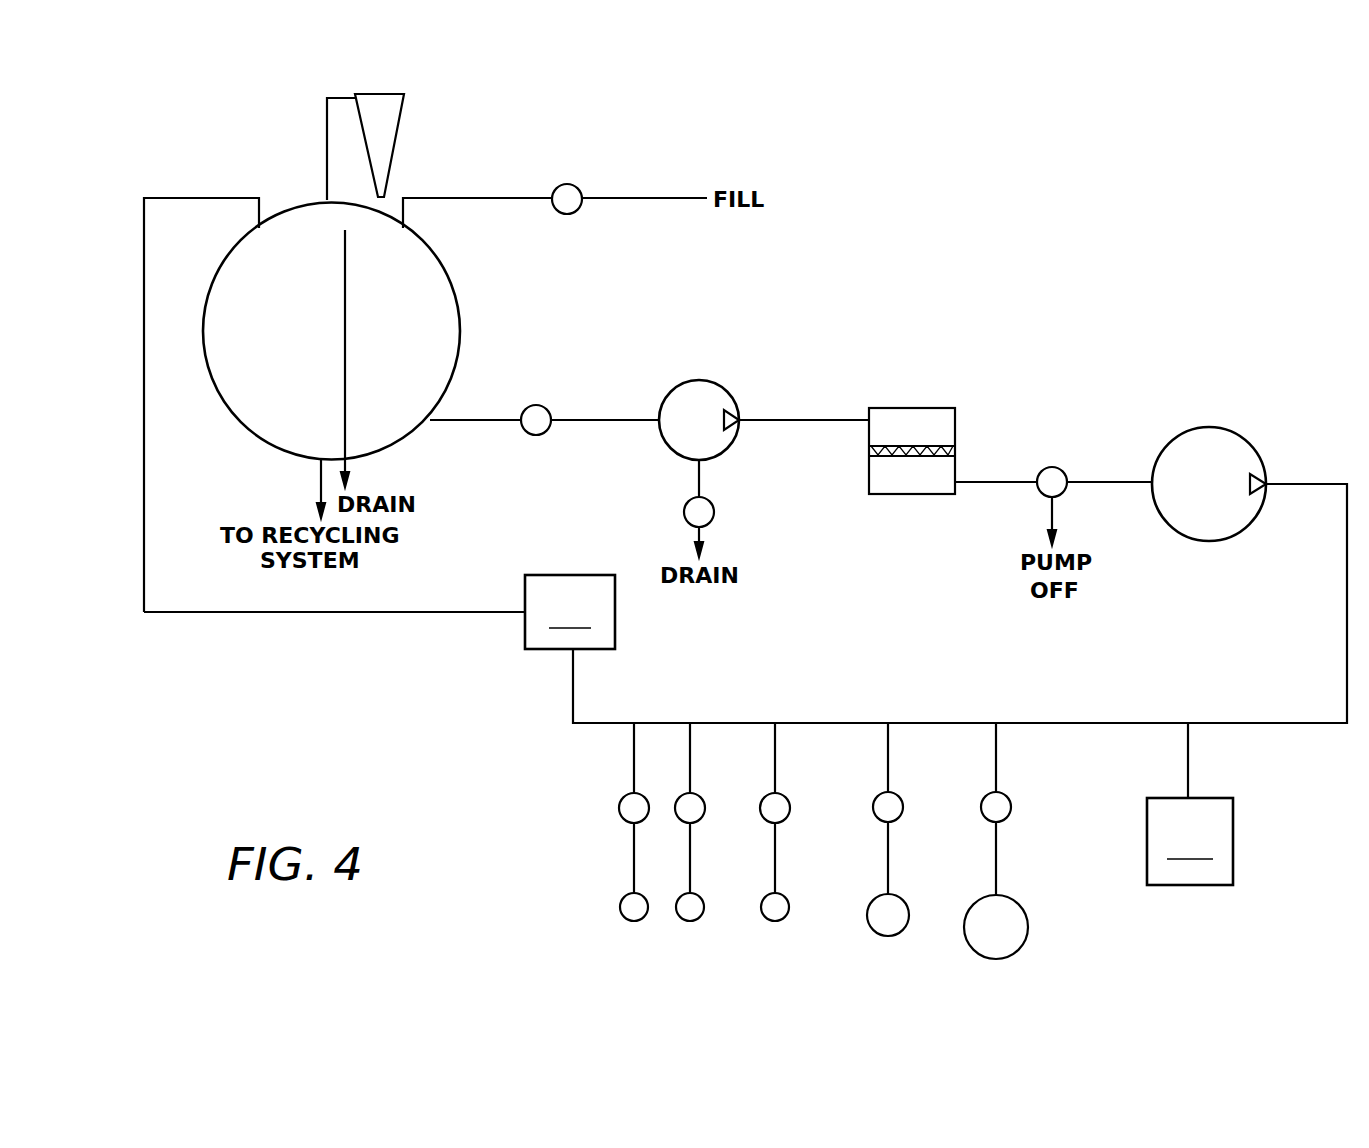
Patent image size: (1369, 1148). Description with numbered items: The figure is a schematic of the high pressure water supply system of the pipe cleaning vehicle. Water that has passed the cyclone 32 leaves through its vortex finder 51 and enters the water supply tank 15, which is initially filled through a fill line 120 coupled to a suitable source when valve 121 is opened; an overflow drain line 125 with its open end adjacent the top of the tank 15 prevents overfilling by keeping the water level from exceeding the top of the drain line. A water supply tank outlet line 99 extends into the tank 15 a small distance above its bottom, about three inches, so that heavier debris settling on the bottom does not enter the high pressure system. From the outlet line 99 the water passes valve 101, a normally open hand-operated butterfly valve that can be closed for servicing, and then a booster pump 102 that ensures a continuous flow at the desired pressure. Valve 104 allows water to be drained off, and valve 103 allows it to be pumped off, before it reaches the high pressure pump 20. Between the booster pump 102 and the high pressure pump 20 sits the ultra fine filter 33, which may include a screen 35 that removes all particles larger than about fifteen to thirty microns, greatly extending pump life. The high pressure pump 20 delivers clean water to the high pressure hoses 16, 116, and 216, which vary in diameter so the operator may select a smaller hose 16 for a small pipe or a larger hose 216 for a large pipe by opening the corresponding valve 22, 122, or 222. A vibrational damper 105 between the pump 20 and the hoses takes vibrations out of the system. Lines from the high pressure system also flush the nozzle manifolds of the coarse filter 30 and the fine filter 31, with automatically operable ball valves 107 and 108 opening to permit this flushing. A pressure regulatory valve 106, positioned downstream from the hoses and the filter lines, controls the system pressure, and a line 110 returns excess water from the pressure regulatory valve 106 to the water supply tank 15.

The water supply tank 15 is at (455, 291).
The overflow drain line 125 is at (345, 385).
The vortex finder 51 is at (355, 98).
The cyclone 32 is at (404, 95).
The valve 121 is at (566, 184).
The fill line 120 is at (627, 198).
The water supply tank outlet line 99 is at (470, 421).
The valve 101 is at (541, 405).
The booster pump 102 is at (706, 380).
The valve 104 is at (712, 517).
The ultra fine filter 33 is at (940, 408).
The screen 35 is at (940, 446).
The valve 103 is at (1055, 467).
The high pressure pump 20 is at (1230, 429).
The pressure regulatory valve 106 is at (570, 612).
The line 110 is at (403, 612).
The ball valve 108 is at (627, 795).
The ball valve 107 is at (700, 797).
The valve 22 is at (782, 796).
The valve 122 is at (892, 793).
The valve 222 is at (1001, 793).
The fine filter 31 is at (631, 921).
The coarse filter 30 is at (688, 921).
The high pressure hose 16 is at (773, 921).
The high pressure hose 116 is at (880, 935).
The high pressure hose 216 is at (1024, 940).
The vibrational damper 105 is at (1190, 804).